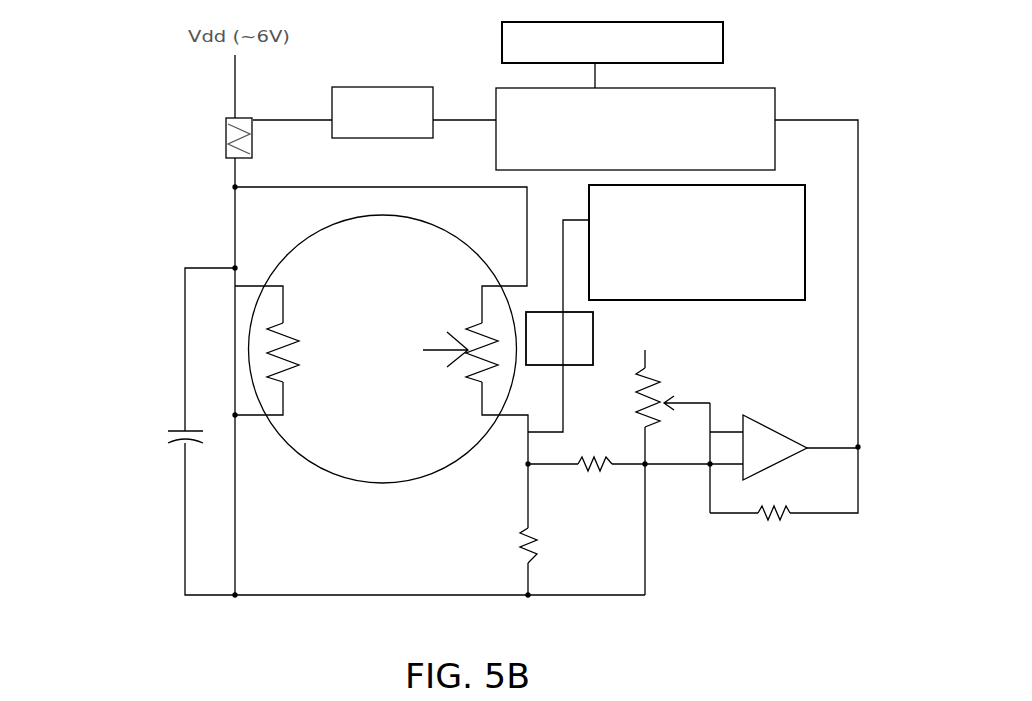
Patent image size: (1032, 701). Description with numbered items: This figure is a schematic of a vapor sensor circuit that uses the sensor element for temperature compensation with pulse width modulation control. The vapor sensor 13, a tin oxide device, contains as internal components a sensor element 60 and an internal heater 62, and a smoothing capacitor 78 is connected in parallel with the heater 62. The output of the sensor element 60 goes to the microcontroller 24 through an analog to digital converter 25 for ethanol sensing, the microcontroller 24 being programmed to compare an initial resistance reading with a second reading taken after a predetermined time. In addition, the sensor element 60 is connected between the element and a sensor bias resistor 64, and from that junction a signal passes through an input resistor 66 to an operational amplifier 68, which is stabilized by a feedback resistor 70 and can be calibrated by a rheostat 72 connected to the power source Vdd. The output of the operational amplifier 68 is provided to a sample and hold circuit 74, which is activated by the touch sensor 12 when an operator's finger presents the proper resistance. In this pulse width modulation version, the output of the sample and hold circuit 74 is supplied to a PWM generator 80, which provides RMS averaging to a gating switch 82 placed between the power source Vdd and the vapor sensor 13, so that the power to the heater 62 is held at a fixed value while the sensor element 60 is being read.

The touch sensor 12 is at (723, 44).
The sample and hold circuit 74 is at (775, 103).
The PWM generator 80 is at (370, 87).
The gating switch 82 is at (239, 120).
The vapor sensor 13 is at (388, 483).
The internal heater 62 is at (296, 342).
The sensor element 60 is at (468, 330).
The analog to digital converter 25 is at (548, 312).
The microcontroller 24 is at (725, 300).
The rheostat 72 is at (650, 372).
The operational amplifier 68 is at (755, 420).
The feedback resistor 70 is at (780, 510).
The input resistor 66 is at (598, 462).
The sensor bias resistor 64 is at (535, 545).
The smoothing capacitor 78 is at (178, 431).